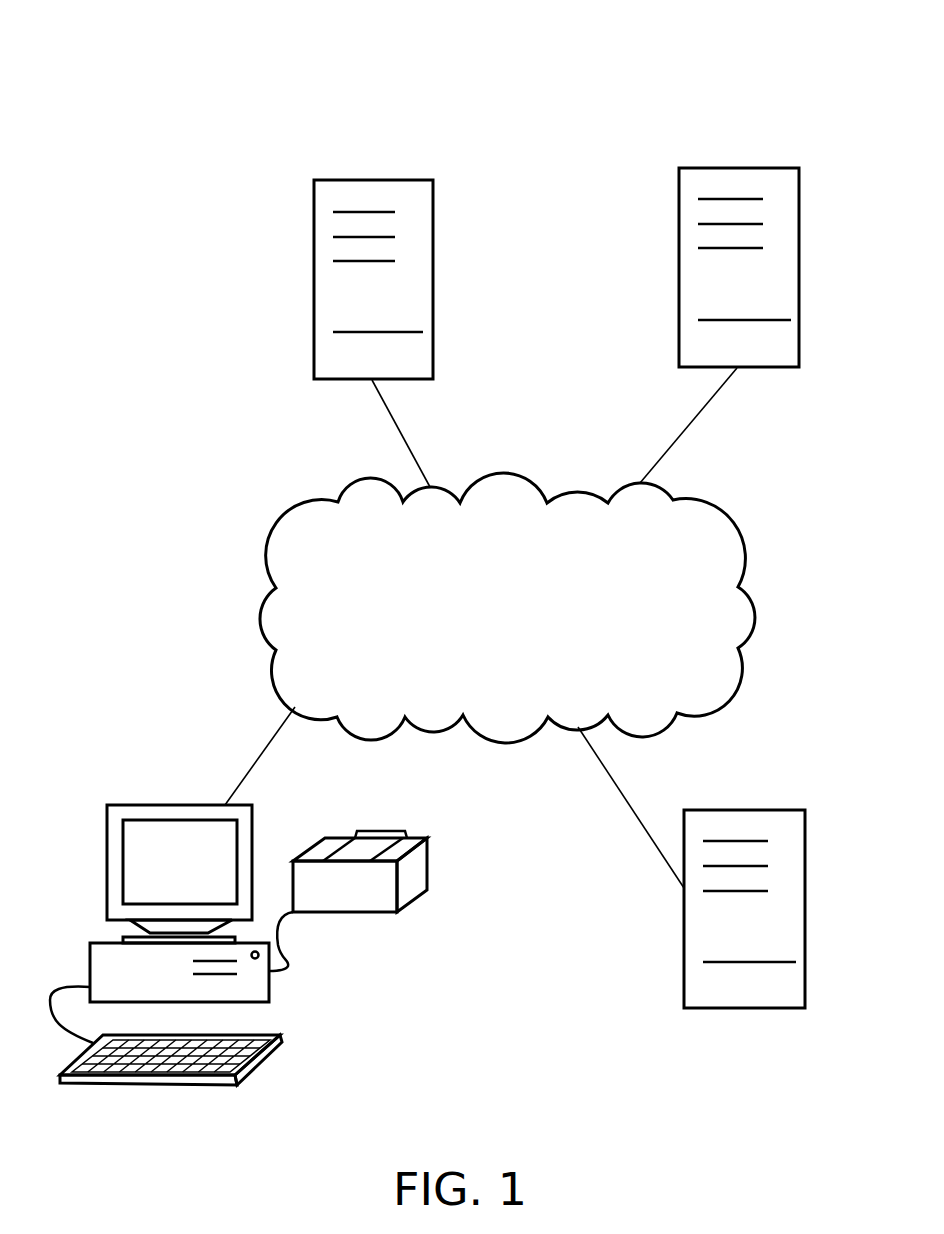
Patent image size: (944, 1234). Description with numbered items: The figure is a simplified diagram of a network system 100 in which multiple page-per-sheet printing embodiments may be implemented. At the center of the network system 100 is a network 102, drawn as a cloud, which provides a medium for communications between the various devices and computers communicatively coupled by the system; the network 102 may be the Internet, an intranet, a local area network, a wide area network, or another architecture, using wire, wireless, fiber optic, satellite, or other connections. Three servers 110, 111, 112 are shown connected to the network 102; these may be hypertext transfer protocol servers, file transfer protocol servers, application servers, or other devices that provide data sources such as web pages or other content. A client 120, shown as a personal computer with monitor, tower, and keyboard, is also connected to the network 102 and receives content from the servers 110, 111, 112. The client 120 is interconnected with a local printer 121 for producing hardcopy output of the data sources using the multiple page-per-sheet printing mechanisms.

The network system 100 is at (430, 74).
The network 102 is at (528, 650).
The server 110 is at (372, 179).
The server 111 is at (738, 167).
The server 112 is at (745, 808).
The client 120 is at (178, 803).
The local printer 121 is at (312, 848).